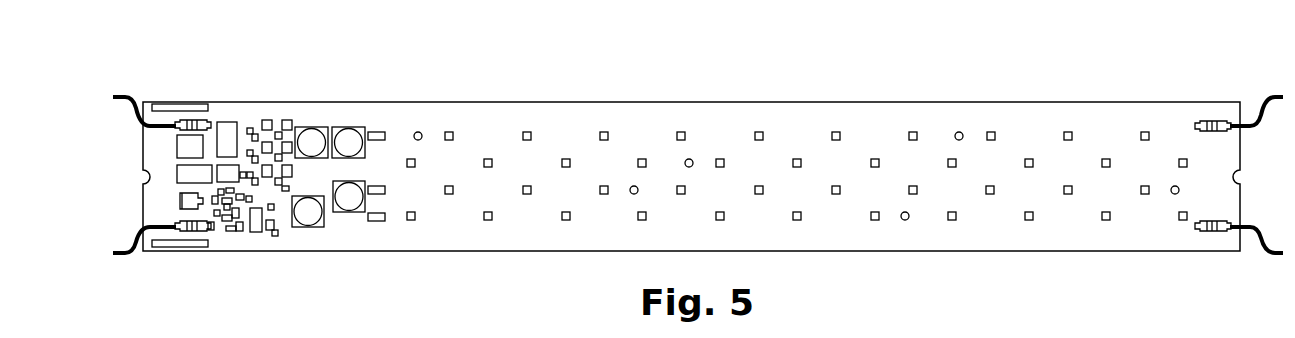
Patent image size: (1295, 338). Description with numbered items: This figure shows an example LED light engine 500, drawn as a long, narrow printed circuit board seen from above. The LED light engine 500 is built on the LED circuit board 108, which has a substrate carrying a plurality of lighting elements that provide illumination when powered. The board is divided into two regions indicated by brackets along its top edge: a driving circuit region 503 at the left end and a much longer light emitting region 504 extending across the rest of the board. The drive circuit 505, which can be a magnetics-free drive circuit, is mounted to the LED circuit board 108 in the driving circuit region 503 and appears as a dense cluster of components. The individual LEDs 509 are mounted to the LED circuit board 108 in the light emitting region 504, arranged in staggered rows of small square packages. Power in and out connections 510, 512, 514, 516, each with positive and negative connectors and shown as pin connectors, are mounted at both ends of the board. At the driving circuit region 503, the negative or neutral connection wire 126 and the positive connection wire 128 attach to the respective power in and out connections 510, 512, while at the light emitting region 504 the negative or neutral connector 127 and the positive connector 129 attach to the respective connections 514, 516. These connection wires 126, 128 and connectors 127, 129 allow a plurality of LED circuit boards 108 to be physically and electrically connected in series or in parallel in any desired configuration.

The LED light engine 500 is at (880, 58).
The driving circuit region 503 is at (373, 70).
The light emitting region 504 is at (1193, 70).
The drive circuit 505 is at (233, 233).
The LED 509 is at (566, 160).
The LED circuit board 108 is at (917, 222).
The power in and out connection 510 is at (190, 125).
The power in and out connection 512 is at (188, 232).
The power in and out connection 514 is at (1220, 122).
The power in and out connection 516 is at (1215, 233).
The negative or neutral connection wire 126 is at (127, 96).
The negative or neutral connector 127 is at (1263, 106).
The positive connection wire 128 is at (133, 256).
The positive connector 129 is at (1257, 249).